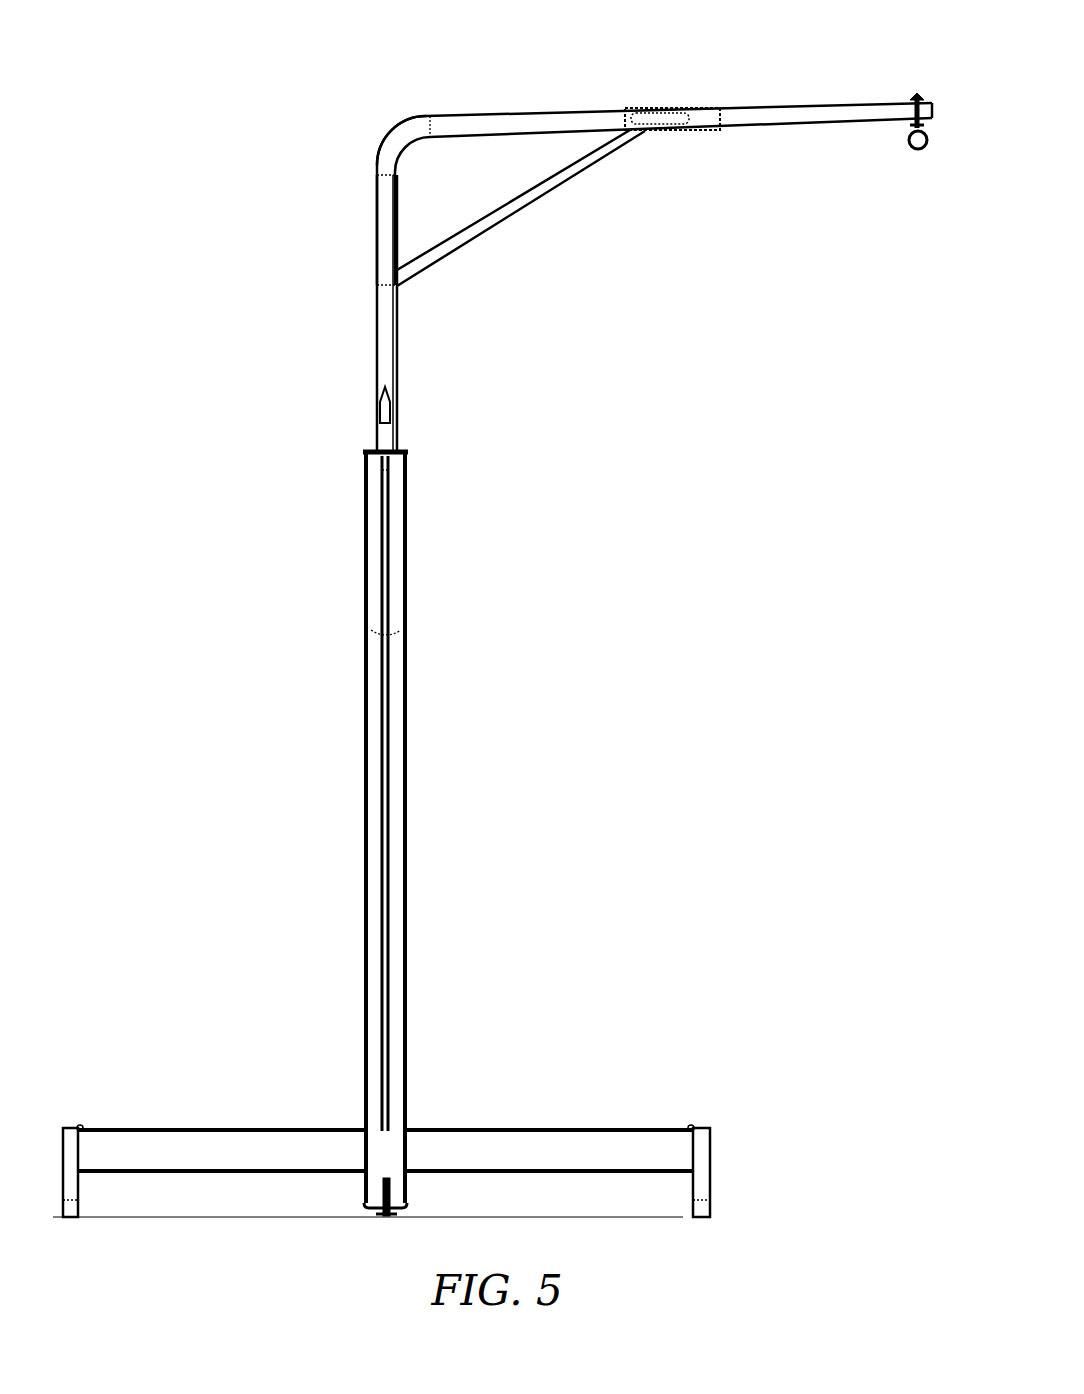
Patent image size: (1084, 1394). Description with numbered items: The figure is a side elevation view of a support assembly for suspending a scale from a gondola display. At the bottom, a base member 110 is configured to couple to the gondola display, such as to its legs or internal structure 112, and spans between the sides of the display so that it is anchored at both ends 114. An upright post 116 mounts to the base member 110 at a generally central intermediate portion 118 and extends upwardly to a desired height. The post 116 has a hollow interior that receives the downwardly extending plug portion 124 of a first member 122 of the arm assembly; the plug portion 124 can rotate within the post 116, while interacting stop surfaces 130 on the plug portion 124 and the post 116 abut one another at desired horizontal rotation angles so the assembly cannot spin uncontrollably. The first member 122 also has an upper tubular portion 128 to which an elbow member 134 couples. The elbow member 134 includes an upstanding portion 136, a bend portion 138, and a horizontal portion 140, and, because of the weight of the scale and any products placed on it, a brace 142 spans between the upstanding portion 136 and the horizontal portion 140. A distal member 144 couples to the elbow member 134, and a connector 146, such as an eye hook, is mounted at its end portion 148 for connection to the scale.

The base member 110 is at (510, 1145).
The legs or internal structure 112 is at (65, 1128).
The ends 114 is at (90, 1140).
The upright post 116 is at (408, 952).
The intermediate portion 118 is at (416, 1155).
The first member 122 is at (398, 358).
The plug portion 124 is at (373, 545).
The upper tubular portion 128 is at (377, 373).
The stop surfaces 130 is at (366, 678).
The elbow member 134 is at (377, 163).
The upstanding portion 136 is at (377, 226).
The bend portion 138 is at (398, 125).
The horizontal portion 140 is at (535, 116).
The brace 142 is at (522, 210).
The distal member 144 is at (758, 127).
The connector 146 is at (912, 148).
The end portion 148 is at (914, 100).